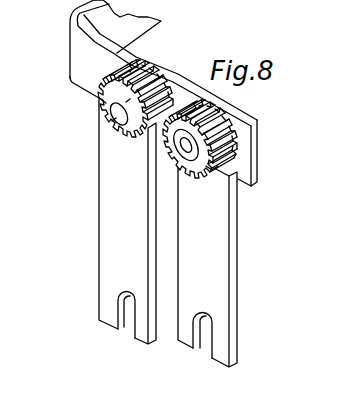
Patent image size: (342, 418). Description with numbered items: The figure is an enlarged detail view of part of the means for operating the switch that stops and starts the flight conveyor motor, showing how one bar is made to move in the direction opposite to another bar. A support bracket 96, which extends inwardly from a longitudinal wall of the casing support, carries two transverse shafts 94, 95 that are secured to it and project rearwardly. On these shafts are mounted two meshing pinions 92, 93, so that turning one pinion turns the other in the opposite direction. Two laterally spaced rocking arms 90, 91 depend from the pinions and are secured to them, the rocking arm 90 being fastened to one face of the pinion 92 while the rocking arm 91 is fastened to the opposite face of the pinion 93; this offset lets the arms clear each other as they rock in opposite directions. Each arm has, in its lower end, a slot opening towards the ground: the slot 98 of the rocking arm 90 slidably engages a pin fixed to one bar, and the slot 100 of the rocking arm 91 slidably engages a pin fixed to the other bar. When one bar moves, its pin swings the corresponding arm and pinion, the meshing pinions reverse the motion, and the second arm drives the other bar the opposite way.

The rocking arm 90 is at (99, 233).
The rocking arm 91 is at (237, 292).
The pinion 92 is at (103, 78).
The pinion 93 is at (236, 93).
The transverse shaft 94 is at (111, 117).
The transverse shaft 95 is at (212, 169).
The support bracket 96 is at (256, 157).
The slot 98 is at (118, 324).
The slot 100 is at (200, 352).